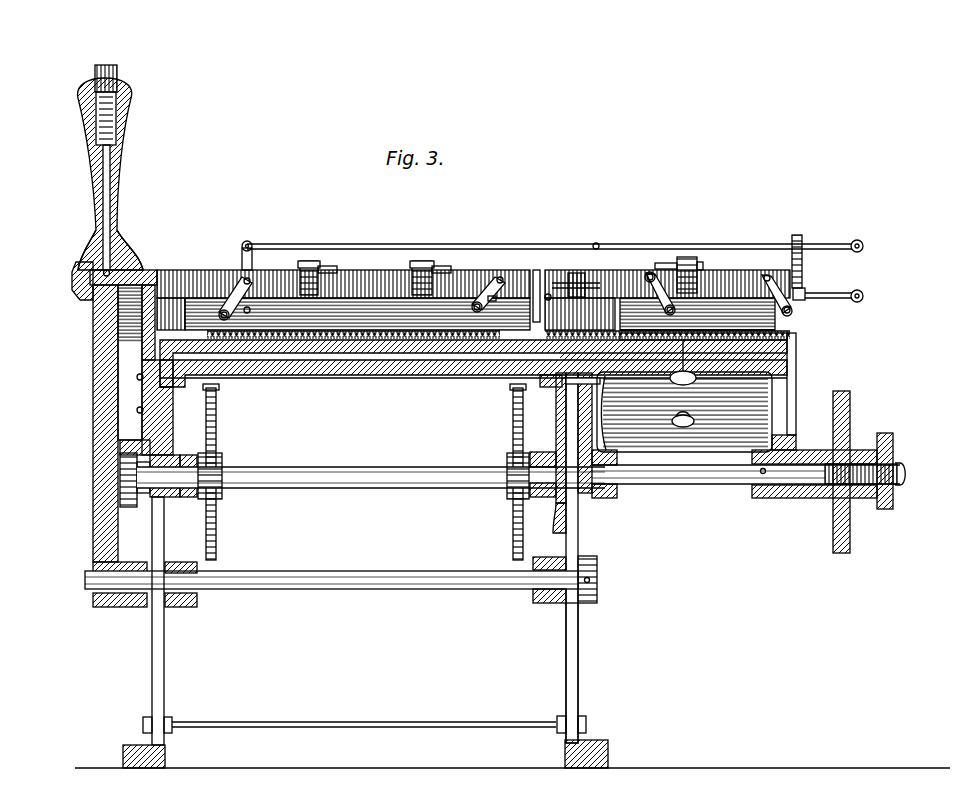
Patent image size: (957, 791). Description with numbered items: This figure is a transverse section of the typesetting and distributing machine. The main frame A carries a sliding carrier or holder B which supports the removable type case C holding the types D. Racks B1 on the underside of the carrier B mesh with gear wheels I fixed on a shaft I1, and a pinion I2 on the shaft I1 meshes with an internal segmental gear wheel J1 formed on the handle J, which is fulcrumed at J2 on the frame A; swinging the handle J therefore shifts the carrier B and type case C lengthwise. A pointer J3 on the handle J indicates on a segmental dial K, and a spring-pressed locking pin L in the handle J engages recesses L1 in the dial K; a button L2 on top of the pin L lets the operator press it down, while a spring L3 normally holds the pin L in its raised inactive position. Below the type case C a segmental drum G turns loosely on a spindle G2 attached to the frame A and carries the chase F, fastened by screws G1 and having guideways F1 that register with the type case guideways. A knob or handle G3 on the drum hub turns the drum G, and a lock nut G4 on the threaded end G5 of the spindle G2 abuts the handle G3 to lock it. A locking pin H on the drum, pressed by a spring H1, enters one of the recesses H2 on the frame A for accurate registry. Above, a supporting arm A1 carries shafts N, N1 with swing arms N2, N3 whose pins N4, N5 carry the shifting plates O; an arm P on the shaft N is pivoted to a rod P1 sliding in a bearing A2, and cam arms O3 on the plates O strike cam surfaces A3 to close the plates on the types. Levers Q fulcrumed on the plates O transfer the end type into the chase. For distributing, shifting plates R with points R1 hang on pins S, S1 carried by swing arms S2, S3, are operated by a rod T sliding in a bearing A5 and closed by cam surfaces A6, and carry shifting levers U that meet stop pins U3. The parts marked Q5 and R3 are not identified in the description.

The locking pin L is at (115, 165).
The recesses L1 is at (76, 282).
The button L2 is at (118, 74).
The spring L3 is at (130, 110).
The handle J is at (92, 166).
The internal segmental gear wheel J1 is at (120, 452).
The fulcrum J2 is at (260, 590).
The pointer J3 is at (130, 252).
The segmental dial K is at (150, 272).
The gear wheels I is at (216, 437).
The shaft I1 is at (408, 480).
The pinion I2 is at (122, 490).
The main frame A is at (216, 721).
The supporting arm A1 is at (470, 275).
The bearing A2 is at (799, 227).
The cam surfaces A3 is at (327, 265).
The bearing A5 is at (804, 292).
The cam surfaces A6 is at (735, 245).
The shifting plate O is at (365, 300).
The cam arms O3 is at (309, 259).
The arm P is at (243, 248).
The rod P1 is at (596, 236).
The shaft N is at (245, 279).
The shaft N1 is at (509, 263).
The swing arms N2 is at (472, 305).
The swing arms N3 is at (494, 300).
The pins N4 is at (220, 315).
The pins N5 is at (250, 310).
The levers Q is at (539, 280).
The hook Q5 is at (549, 300).
The shifting lever U is at (649, 275).
The stop-pin U3 is at (592, 265).
The shifting plates R is at (745, 288).
The lugs or points R1 is at (760, 318).
The post R3 is at (684, 256).
The pin S is at (792, 311).
The pin S1 is at (676, 310).
The swing arms S2 is at (788, 283).
The swing arms S3 is at (656, 278).
The rod T is at (855, 292).
The carrier or holder B is at (354, 375).
The racks B1 is at (219, 390).
The type case or magazine C is at (312, 355).
The types D is at (420, 366).
The chase F is at (797, 352).
The guideways F1 is at (797, 336).
The locking pin H is at (560, 412).
The spring H1 is at (660, 410).
The recesses H2 is at (567, 386).
The segmental drum G is at (710, 499).
The screws G1 is at (690, 398).
The spindle G2 is at (675, 486).
The knob or handle G3 is at (840, 554).
The lock nut G4 is at (884, 434).
The outer threaded end G5 is at (907, 472).